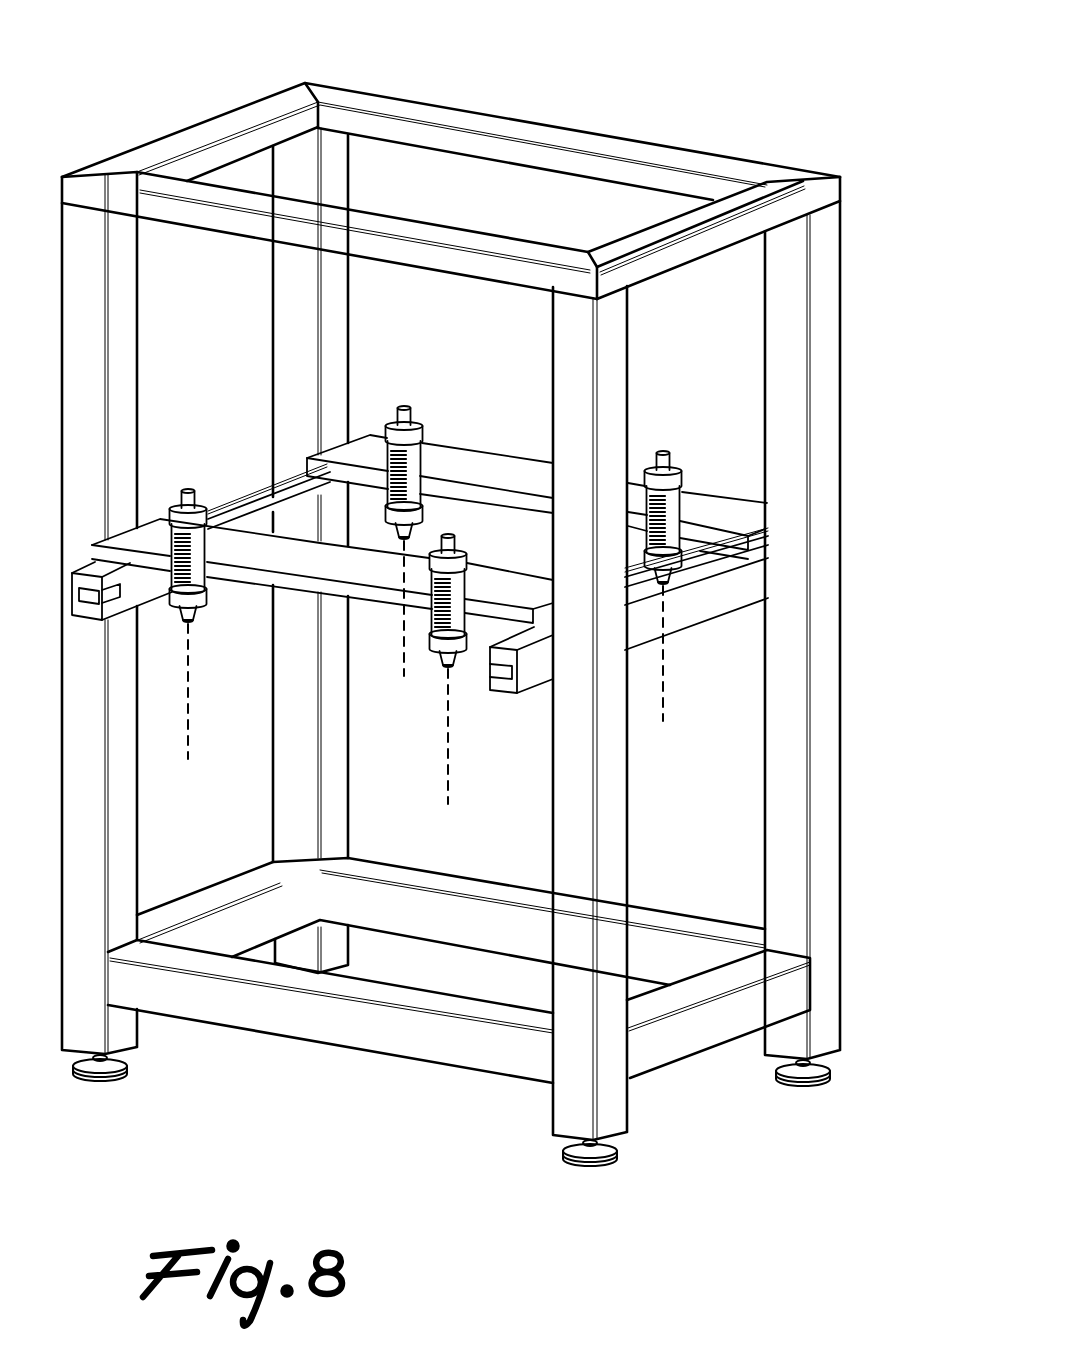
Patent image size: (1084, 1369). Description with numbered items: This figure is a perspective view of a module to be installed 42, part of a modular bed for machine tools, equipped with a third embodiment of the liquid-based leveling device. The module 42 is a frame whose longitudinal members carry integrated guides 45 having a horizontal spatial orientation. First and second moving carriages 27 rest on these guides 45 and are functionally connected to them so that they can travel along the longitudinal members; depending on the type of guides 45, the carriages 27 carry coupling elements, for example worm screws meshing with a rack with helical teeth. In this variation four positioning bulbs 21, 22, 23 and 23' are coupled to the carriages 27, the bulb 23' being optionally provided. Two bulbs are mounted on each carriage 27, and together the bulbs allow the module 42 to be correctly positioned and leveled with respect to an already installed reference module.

The module to be installed 42 is at (843, 113).
The positioning bulb 21 is at (186, 488).
The positioning bulb 22 is at (436, 660).
The positioning bulb 23 is at (695, 557).
The positioning bulb 23' is at (456, 496).
The moving carriage 27 is at (258, 555).
The integrated guide 45 is at (300, 512).